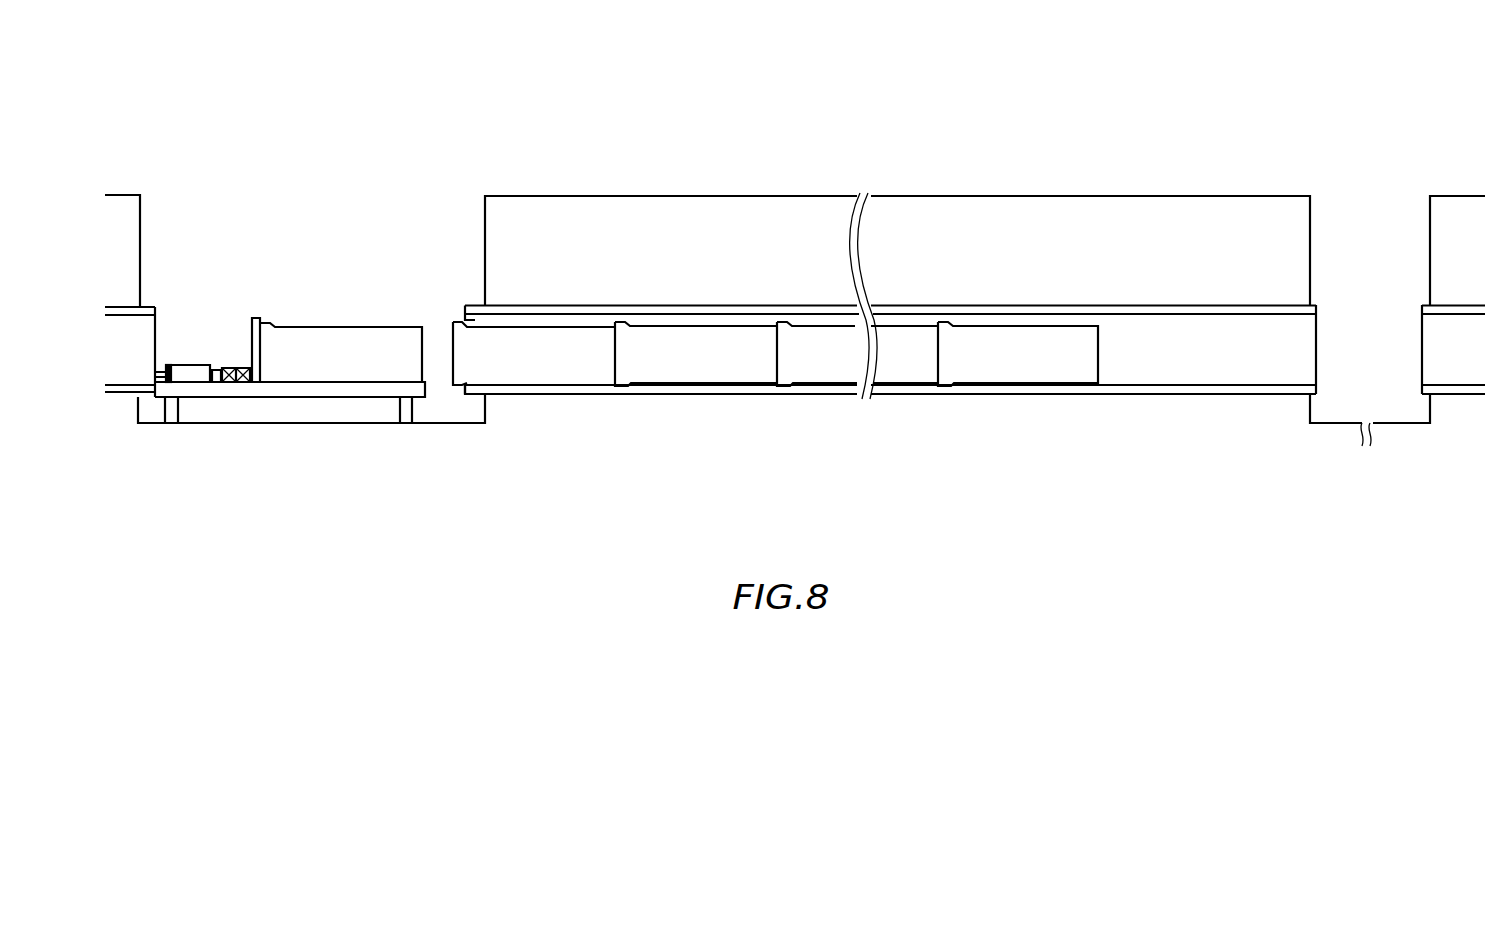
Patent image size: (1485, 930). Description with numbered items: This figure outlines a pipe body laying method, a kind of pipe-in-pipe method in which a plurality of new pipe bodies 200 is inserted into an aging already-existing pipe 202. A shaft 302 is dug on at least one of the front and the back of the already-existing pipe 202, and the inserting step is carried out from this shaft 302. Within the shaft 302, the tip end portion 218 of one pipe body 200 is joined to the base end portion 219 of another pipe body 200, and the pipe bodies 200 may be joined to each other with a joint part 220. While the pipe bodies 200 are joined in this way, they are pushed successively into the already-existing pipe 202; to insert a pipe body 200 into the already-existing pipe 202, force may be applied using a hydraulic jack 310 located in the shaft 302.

The pipe body 200 is at (349, 326).
The already-existing pipe 202 is at (1090, 305).
The tip end portion 218 is at (426, 342).
The base end portion 219 is at (447, 378).
The joint part 220 is at (458, 322).
The shaft 302 is at (278, 290).
The hydraulic jack 310 is at (190, 375).